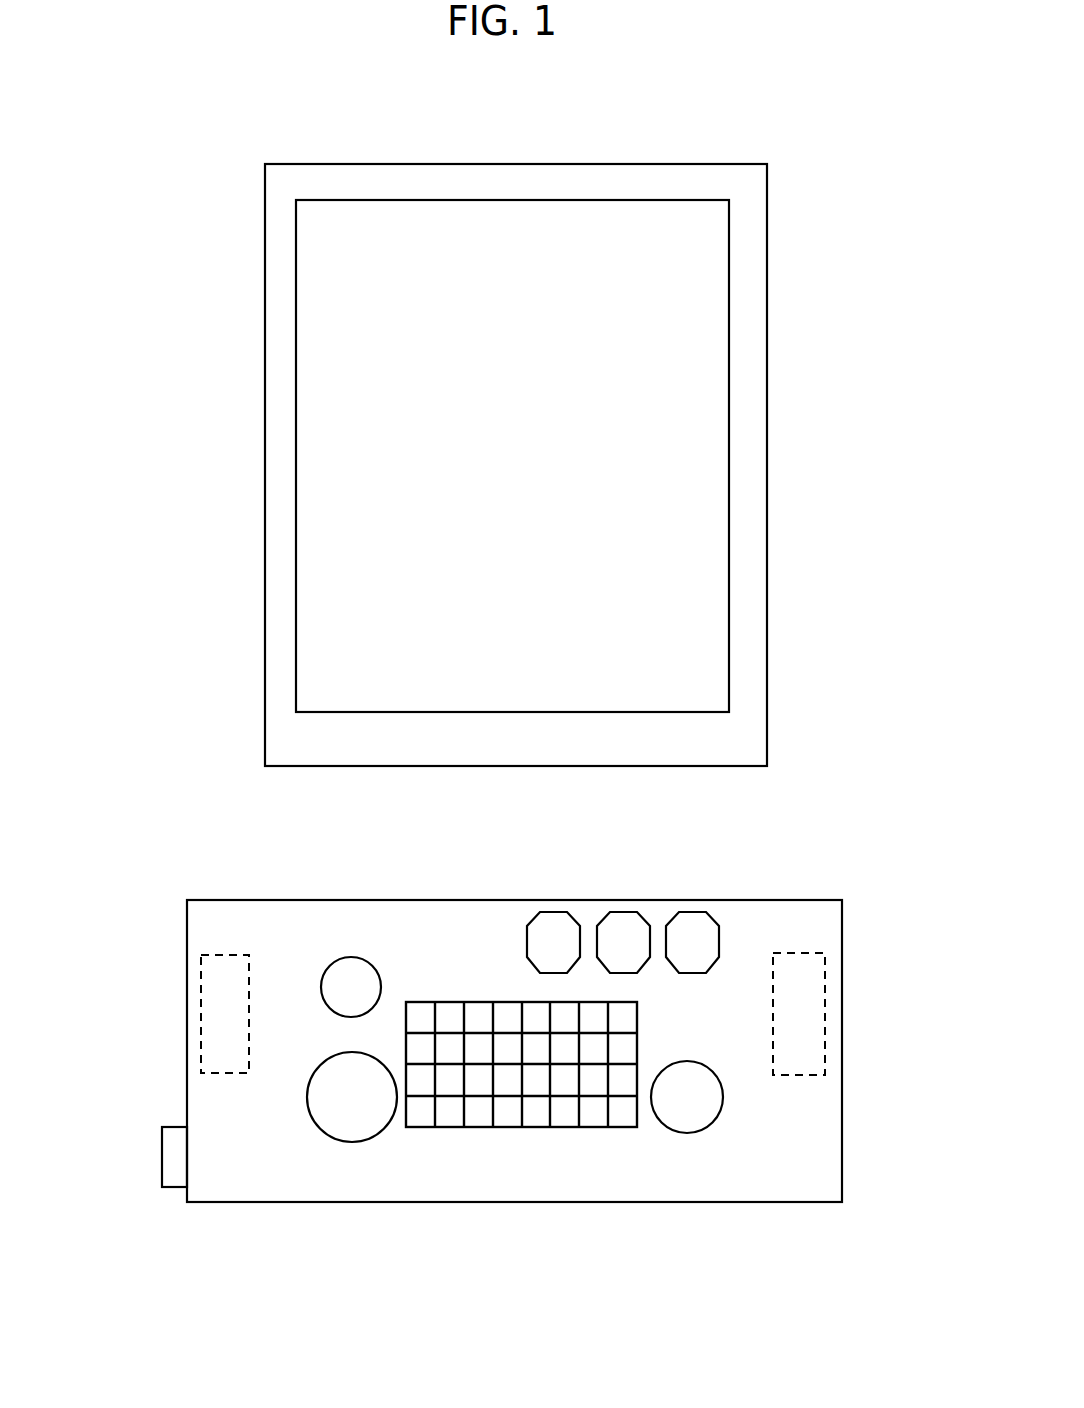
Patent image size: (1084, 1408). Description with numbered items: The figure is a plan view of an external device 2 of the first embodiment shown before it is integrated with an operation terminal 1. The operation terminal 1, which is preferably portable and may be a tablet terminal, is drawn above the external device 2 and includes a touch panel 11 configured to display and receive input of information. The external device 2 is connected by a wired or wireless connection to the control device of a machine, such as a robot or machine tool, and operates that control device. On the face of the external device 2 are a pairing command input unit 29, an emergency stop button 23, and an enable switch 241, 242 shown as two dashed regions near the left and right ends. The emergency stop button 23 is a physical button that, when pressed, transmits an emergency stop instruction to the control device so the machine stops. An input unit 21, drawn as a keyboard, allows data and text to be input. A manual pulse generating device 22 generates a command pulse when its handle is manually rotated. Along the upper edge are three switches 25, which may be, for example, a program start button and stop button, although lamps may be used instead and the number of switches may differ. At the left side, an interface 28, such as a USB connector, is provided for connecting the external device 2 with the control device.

The operation terminal 1 is at (487, 161).
The touch panel 11 is at (729, 356).
The external device 2 is at (813, 900).
The input unit 21 is at (538, 1112).
The manual pulse generating device 22 is at (350, 1115).
The emergency stop button 23 is at (688, 1105).
The switches 25 is at (717, 888).
The interface 28 is at (175, 1173).
The pairing command input unit 29 is at (347, 972).
The enable switch 241 is at (790, 1057).
The enable switch 242 is at (218, 972).